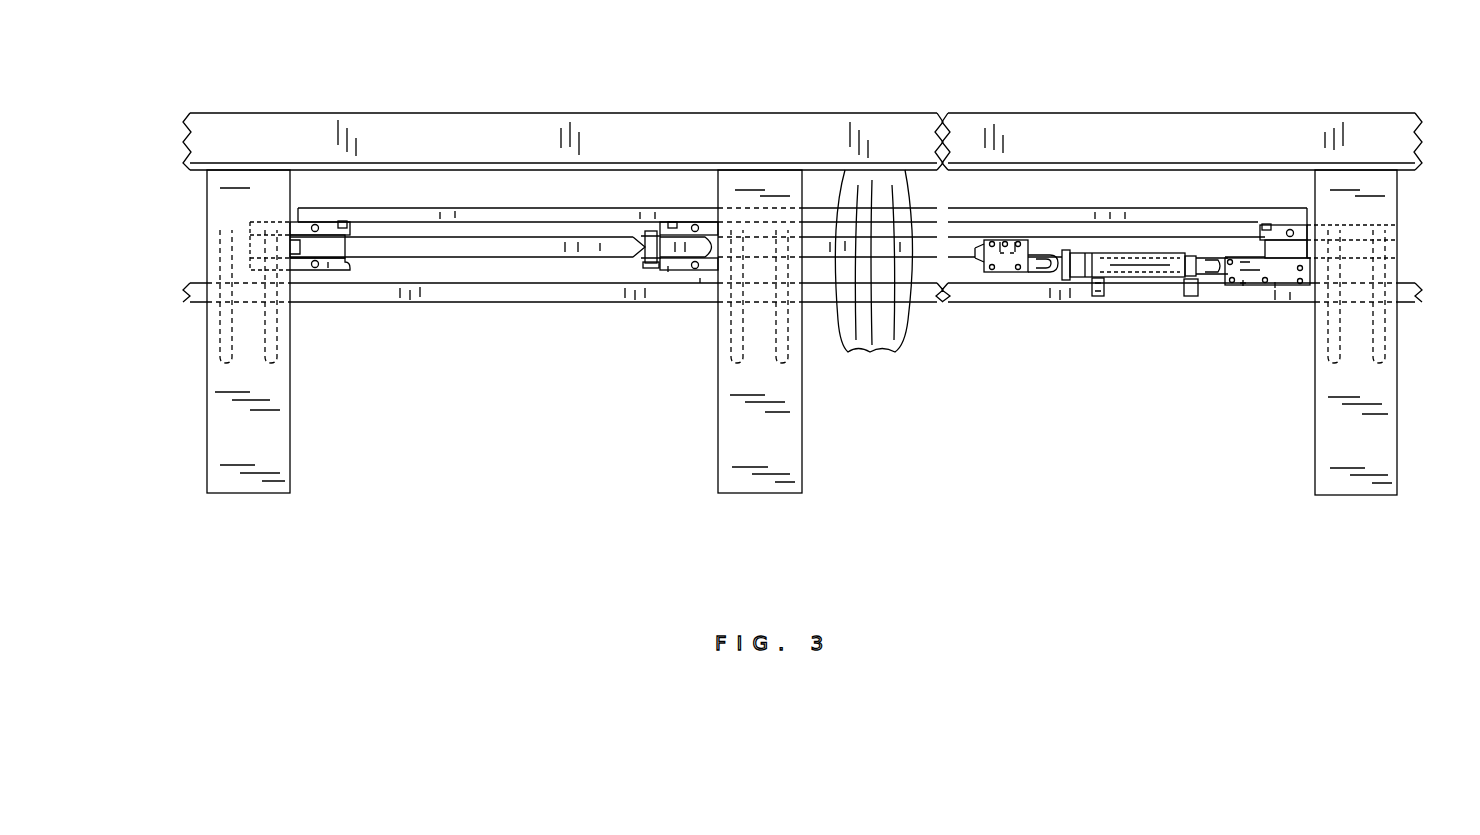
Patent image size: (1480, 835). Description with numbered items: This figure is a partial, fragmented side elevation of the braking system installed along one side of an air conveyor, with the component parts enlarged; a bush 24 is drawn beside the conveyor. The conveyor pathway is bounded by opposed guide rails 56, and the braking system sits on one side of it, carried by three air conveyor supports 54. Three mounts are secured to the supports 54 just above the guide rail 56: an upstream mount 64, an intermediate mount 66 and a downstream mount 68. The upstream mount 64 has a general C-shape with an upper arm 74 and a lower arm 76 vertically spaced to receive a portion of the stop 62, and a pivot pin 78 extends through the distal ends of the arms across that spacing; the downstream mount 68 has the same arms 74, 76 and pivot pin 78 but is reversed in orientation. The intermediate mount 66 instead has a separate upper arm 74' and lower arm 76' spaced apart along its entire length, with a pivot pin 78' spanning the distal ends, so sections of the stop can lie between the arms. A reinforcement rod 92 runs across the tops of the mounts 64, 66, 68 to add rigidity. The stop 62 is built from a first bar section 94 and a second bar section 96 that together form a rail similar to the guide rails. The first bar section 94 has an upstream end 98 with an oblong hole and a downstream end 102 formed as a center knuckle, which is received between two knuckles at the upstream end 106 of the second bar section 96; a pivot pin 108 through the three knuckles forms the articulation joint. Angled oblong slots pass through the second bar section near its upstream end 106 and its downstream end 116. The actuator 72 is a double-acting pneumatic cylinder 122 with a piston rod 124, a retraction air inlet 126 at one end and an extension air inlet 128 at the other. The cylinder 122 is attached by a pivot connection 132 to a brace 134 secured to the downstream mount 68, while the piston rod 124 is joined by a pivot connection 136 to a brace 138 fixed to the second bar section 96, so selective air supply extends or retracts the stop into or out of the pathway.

The bush 24 is at (880, 355).
The air conveyor support 54 is at (247, 482).
The guide rail 56 is at (820, 297).
The stop 62 is at (1142, 278).
The upstream mount 64 is at (762, 217).
The intermediate mount 66 is at (702, 277).
The downstream mount 68 is at (1310, 218).
The actuator 72 is at (1145, 283).
The upper arm 74 is at (823, 162).
The upper arm 74' is at (730, 155).
The lower arm 76 is at (805, 331).
The lower arm 76' is at (689, 350).
The pivot pin 78 is at (804, 131).
The pivot pin 78' is at (709, 139).
The reinforcement rod 92 is at (487, 212).
The first bar section 94 is at (494, 247).
The second bar section 96 is at (900, 248).
The upstream end 98 is at (290, 247).
The downstream end 102 is at (693, 247).
The upstream end 106 is at (623, 263).
The pivot pin 108 is at (652, 264).
The downstream end 116 is at (1307, 252).
The cylinder 122 is at (1168, 275).
The piston rod 124 is at (1066, 285).
The retraction air inlet 126 is at (1098, 296).
The extension air inlet 128 is at (1190, 272).
The pivot connection 132 is at (1212, 255).
The brace 134 is at (1243, 287).
The pivot connection 136 is at (1045, 257).
The brace 138 is at (1007, 248).